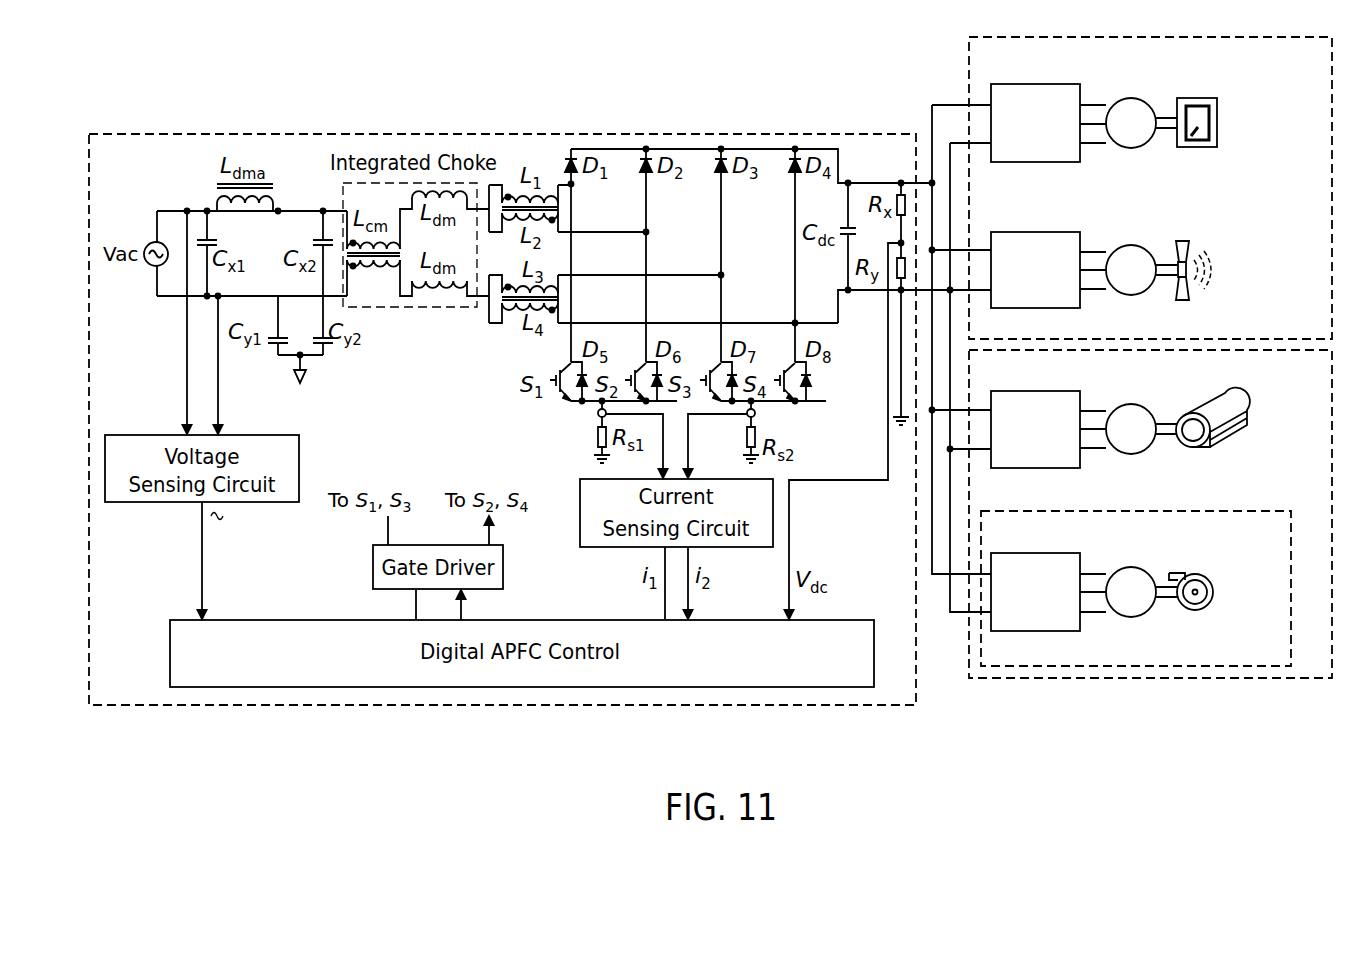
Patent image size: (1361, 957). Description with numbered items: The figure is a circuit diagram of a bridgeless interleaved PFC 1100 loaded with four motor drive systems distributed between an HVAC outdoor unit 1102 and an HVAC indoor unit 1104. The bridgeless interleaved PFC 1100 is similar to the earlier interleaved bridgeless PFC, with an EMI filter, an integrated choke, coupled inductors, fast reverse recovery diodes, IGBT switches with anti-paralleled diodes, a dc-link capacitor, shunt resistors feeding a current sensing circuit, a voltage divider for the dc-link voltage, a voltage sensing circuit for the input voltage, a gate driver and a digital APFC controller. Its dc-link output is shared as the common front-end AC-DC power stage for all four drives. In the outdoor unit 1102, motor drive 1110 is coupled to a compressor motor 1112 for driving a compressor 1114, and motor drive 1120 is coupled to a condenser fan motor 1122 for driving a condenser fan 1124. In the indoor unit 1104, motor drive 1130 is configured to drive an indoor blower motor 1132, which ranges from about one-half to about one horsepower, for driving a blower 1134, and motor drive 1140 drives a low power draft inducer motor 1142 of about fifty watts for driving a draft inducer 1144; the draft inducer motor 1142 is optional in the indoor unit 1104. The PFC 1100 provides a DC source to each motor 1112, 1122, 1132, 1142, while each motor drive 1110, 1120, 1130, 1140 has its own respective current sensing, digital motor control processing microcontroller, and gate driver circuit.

The bridgeless interleaved PFC 1100 is at (516, 706).
The HVAC outdoor unit 1102 is at (1112, 37).
The HVAC indoor unit 1104 is at (1163, 678).
The motor drive 1110 is at (1013, 84).
The compressor motor 1112 is at (1131, 150).
The compressor 1114 is at (1218, 134).
The motor drive 1120 is at (1013, 232).
The condenser fan motor 1122 is at (1131, 297).
The condenser fan 1124 is at (1190, 296).
The motor drive 1130 is at (1013, 391).
The indoor blower motor 1132 is at (1131, 457).
The blower 1134 is at (1240, 438).
The motor drive 1140 is at (1013, 553).
The draft inducer motor 1142 is at (1131, 620).
The draft inducer 1144 is at (1208, 608).